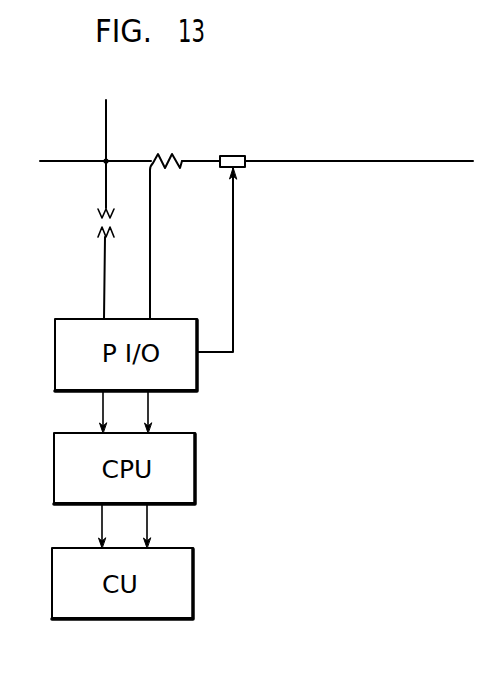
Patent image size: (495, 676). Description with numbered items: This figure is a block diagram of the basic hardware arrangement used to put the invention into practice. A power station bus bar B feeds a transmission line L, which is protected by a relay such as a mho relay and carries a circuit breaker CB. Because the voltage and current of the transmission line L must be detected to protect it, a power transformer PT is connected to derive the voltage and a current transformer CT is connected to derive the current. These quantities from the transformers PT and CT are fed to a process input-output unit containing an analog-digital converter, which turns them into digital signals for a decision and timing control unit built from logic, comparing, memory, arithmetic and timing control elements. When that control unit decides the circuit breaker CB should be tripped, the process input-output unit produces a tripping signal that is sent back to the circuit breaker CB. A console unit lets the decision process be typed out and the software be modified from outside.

The transmission line L is at (373, 160).
The power station bus bar B is at (106, 131).
The power transformer PT is at (96, 222).
The current transformer CT is at (167, 170).
The circuit breaker CB is at (233, 156).